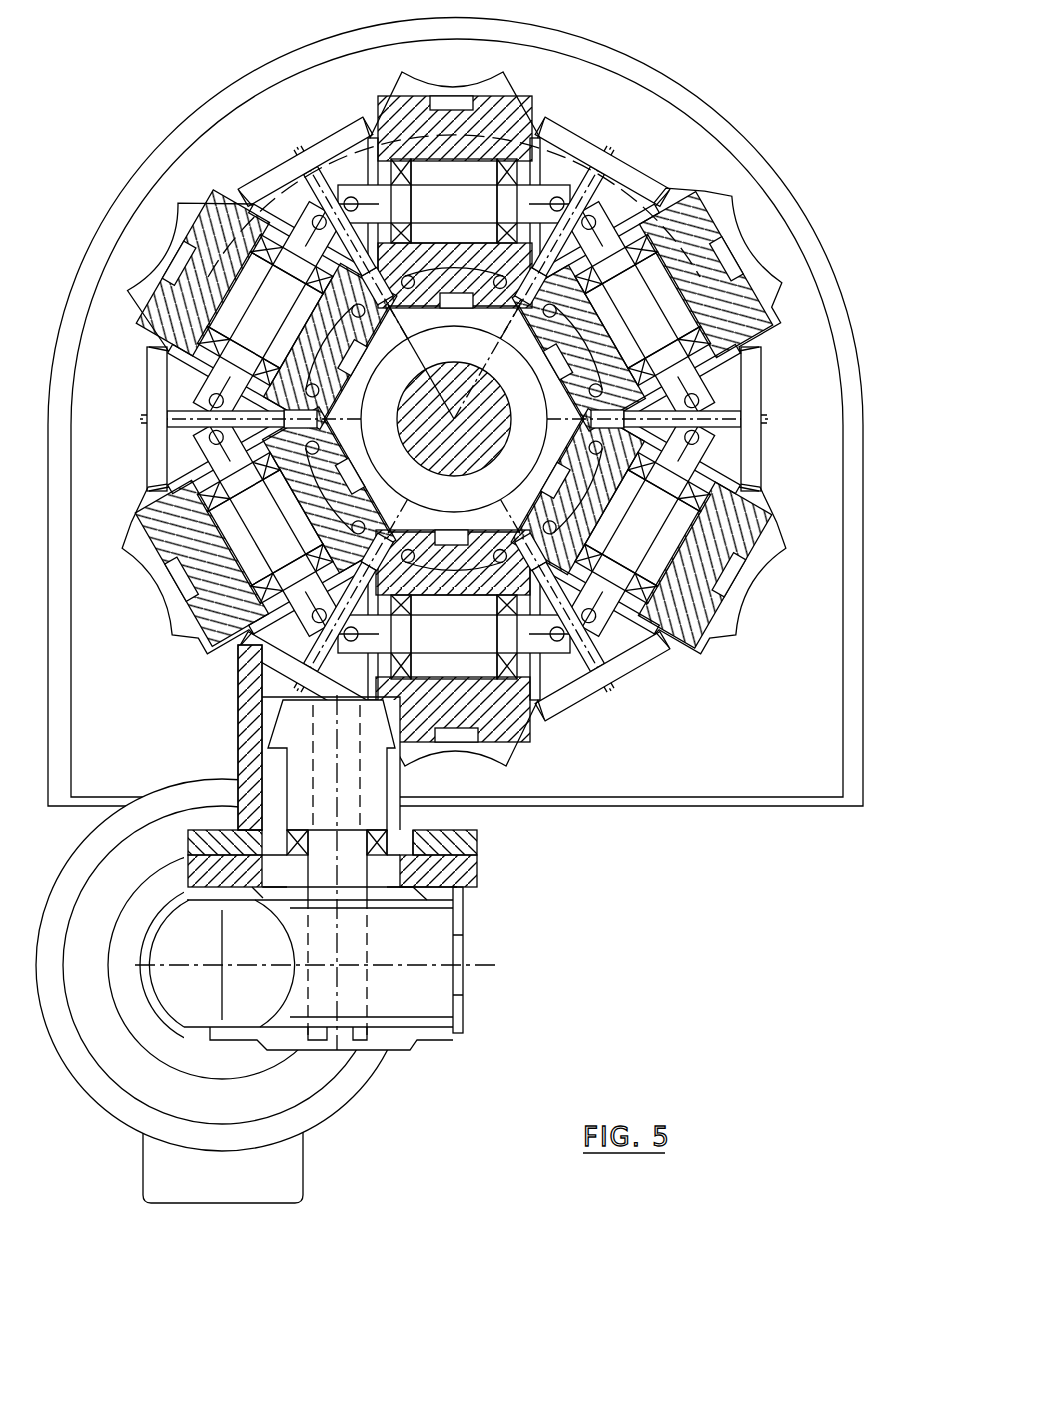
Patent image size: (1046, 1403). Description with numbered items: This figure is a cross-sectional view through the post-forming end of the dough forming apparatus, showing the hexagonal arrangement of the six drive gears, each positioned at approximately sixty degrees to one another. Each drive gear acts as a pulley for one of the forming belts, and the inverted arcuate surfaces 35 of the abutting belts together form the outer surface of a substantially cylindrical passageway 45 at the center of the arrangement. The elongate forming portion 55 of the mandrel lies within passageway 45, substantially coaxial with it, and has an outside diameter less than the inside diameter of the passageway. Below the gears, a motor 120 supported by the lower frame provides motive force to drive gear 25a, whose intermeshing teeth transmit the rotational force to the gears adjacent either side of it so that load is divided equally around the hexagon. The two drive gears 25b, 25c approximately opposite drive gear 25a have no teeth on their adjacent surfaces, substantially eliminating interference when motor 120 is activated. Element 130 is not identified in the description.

The drive gear 25a is at (515, 755).
The drive gear 25b is at (392, 130).
The drive gear 25c is at (213, 245).
The arcuate surface 35 is at (760, 575).
The passageway 45 is at (700, 445).
The forming portion 55 is at (700, 365).
The roller assembly 130 is at (550, 583).
The motor 120 is at (440, 948).